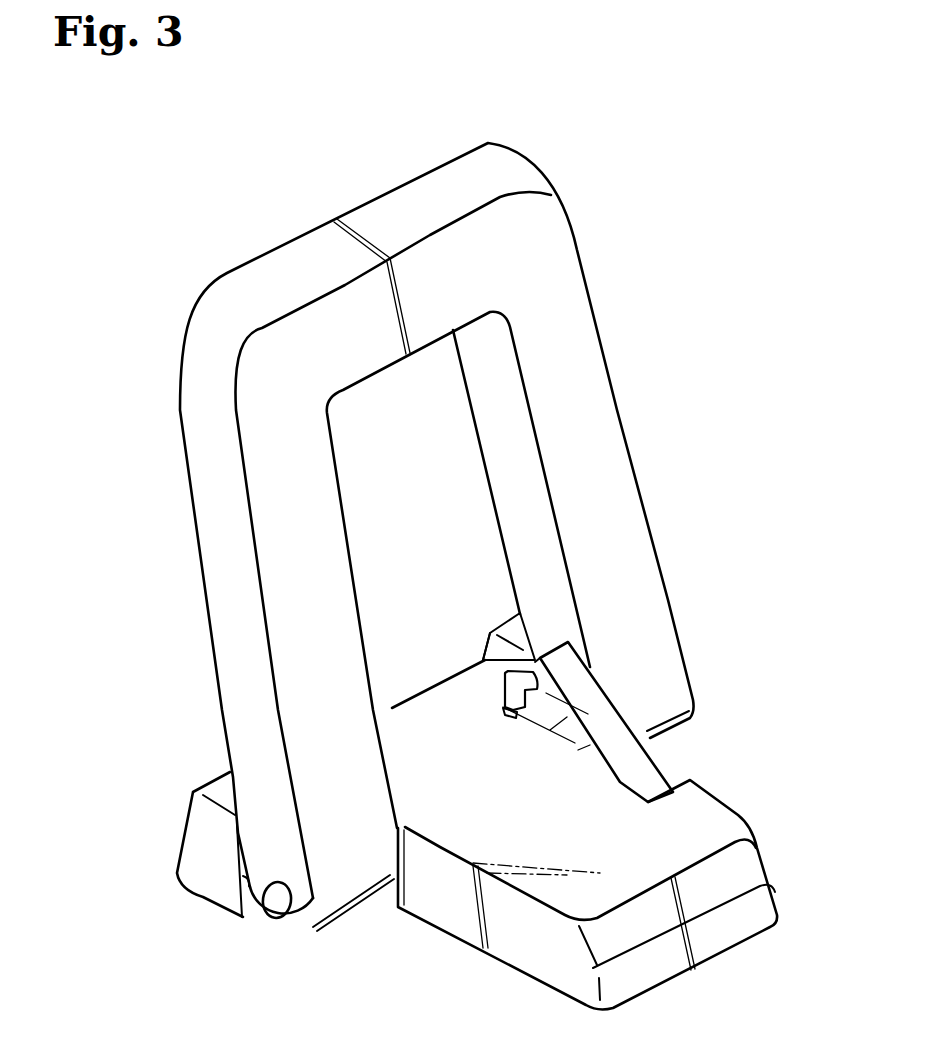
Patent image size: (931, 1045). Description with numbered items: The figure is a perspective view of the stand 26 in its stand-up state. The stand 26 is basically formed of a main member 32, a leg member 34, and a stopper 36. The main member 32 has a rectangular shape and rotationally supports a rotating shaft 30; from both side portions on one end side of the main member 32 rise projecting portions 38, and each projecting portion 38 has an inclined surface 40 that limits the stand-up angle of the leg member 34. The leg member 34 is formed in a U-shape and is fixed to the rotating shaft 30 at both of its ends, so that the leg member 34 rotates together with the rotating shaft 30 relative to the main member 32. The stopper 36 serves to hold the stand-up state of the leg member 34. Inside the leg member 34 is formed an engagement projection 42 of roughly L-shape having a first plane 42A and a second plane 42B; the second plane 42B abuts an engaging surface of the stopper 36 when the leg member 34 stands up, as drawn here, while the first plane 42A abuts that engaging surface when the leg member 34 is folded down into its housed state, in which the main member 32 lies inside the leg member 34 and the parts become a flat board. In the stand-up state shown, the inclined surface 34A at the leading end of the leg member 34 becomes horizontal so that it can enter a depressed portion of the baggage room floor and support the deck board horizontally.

The stand 26 is at (235, 211).
The rotating shaft 30 is at (278, 905).
The main member 32 is at (415, 712).
The leg member 34 is at (558, 275).
The inclined surface 34A is at (405, 210).
The stopper 36 is at (658, 765).
The projecting portions 38 is at (515, 625).
The inclined surface 40 is at (243, 892).
The engagement projection 42 is at (513, 718).
The first plane 42A is at (502, 685).
The second plane 42B is at (490, 633).